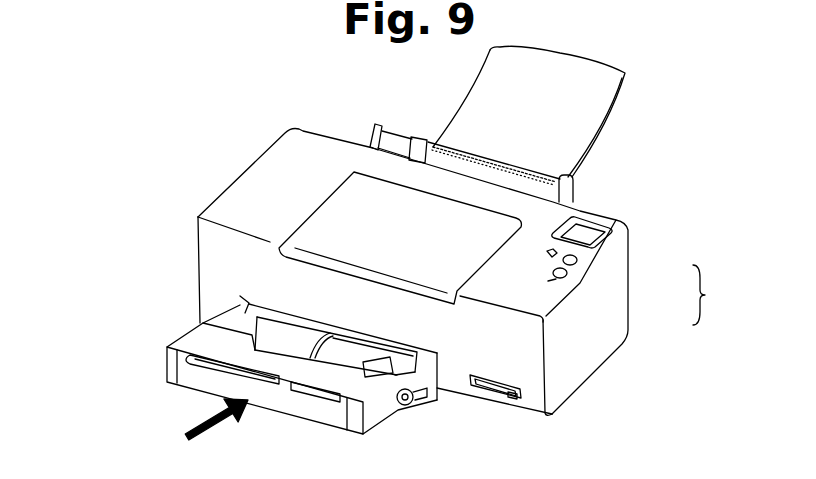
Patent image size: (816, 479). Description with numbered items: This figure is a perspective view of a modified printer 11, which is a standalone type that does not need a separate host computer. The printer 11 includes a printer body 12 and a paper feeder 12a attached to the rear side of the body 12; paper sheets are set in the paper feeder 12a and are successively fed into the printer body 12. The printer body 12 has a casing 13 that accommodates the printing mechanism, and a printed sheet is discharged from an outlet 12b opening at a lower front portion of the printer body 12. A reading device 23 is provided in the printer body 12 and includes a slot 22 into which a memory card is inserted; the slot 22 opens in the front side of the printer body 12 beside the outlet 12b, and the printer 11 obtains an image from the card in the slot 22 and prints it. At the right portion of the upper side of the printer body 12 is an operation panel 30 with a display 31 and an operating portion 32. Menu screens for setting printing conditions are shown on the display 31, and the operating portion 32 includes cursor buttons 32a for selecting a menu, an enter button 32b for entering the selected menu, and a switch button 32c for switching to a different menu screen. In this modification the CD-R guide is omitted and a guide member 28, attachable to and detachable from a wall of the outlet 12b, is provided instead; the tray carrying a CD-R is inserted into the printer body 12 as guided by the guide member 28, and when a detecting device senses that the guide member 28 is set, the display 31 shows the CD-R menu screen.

The printer 11 is at (727, 69).
The printer body 12 is at (265, 135).
The paper feeder 12a is at (373, 132).
The outlet 12b is at (425, 352).
The casing 13 is at (598, 218).
The slot 22 is at (500, 387).
The reading device 23 is at (486, 405).
The guide member 28 is at (217, 316).
The operation panel 30 is at (616, 226).
The display 31 is at (555, 253).
The operating portion 32 is at (717, 295).
The cursor buttons 32a is at (577, 262).
The enter button 32b is at (567, 276).
The switch button 32c is at (567, 277).